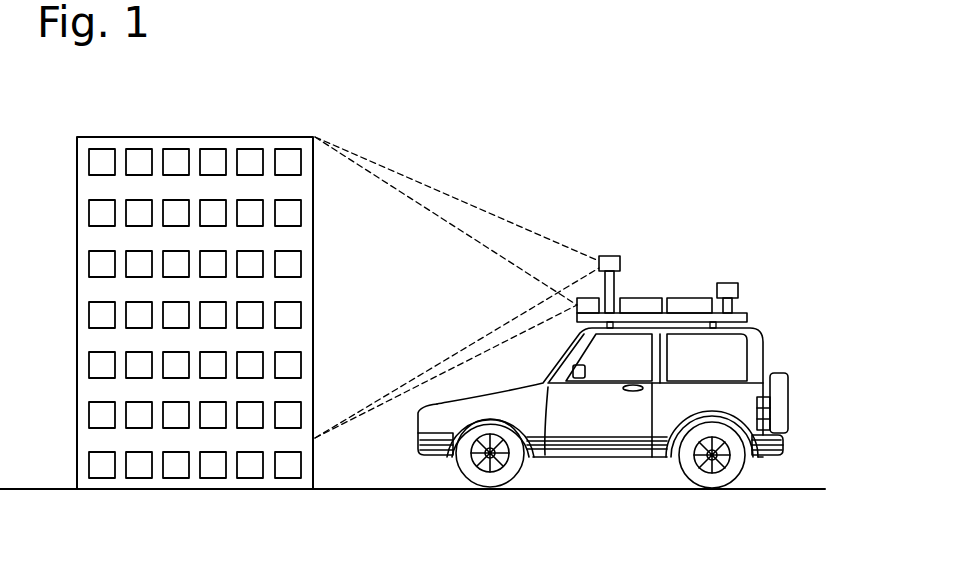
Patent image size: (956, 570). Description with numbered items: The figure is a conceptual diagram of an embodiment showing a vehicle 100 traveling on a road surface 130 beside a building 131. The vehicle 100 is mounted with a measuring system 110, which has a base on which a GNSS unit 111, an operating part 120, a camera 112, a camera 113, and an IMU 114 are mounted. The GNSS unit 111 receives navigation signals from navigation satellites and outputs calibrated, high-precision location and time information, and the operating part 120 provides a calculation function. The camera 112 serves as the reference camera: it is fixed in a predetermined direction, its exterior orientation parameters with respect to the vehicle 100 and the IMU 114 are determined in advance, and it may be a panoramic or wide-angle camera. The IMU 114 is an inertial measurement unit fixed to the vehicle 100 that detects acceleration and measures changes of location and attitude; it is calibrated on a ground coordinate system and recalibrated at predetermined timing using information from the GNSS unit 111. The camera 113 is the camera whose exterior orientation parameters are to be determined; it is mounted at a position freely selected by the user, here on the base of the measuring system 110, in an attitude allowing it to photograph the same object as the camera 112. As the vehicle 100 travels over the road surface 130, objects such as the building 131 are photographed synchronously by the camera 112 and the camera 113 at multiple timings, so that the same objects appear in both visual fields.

The vehicle 100 is at (758, 349).
The measuring system 110 is at (750, 308).
The GNSS unit 111 is at (723, 283).
The camera 112 is at (604, 256).
The camera 113 is at (577, 307).
The IMU 114 is at (637, 298).
The operating part 120 is at (672, 298).
The road surface 130 is at (799, 486).
The building 131 is at (269, 143).